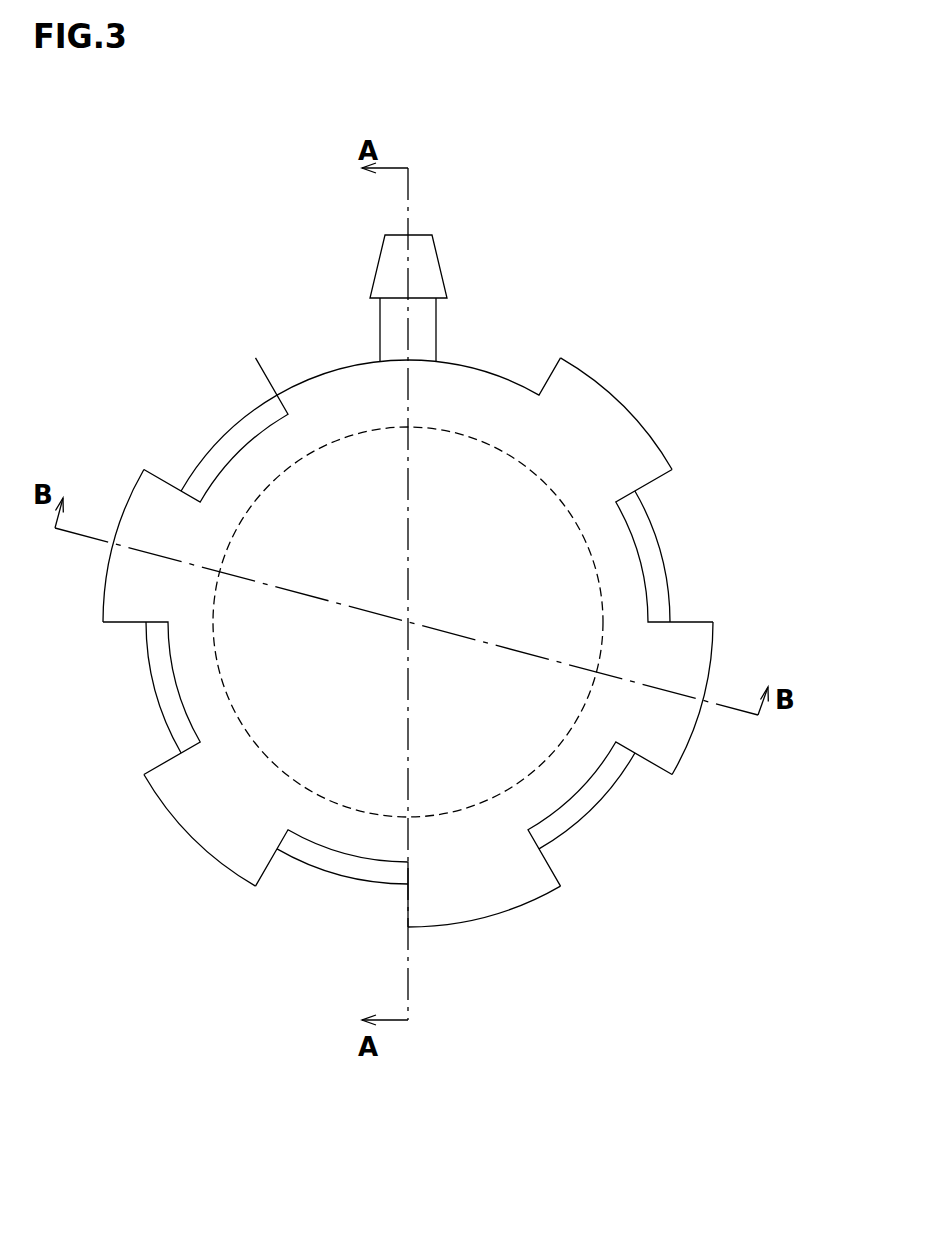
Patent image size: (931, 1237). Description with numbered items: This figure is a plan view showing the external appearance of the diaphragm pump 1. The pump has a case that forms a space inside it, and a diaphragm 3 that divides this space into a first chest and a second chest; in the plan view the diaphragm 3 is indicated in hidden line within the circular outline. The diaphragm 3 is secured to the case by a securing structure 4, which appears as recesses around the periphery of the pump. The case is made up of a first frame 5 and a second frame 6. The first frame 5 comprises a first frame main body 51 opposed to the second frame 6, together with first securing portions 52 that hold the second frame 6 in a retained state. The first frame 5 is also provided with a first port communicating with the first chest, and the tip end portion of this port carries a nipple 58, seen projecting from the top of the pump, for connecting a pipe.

The diaphragm pump 1 is at (407, 575).
The diaphragm 3 is at (303, 733).
The securing structure 4 is at (98, 629).
The first frame 5 is at (477, 868).
The first frame main body 51 is at (505, 732).
The first securing portions 52 is at (150, 576).
The nipple 58 is at (425, 266).
The second frame 6 is at (645, 803).